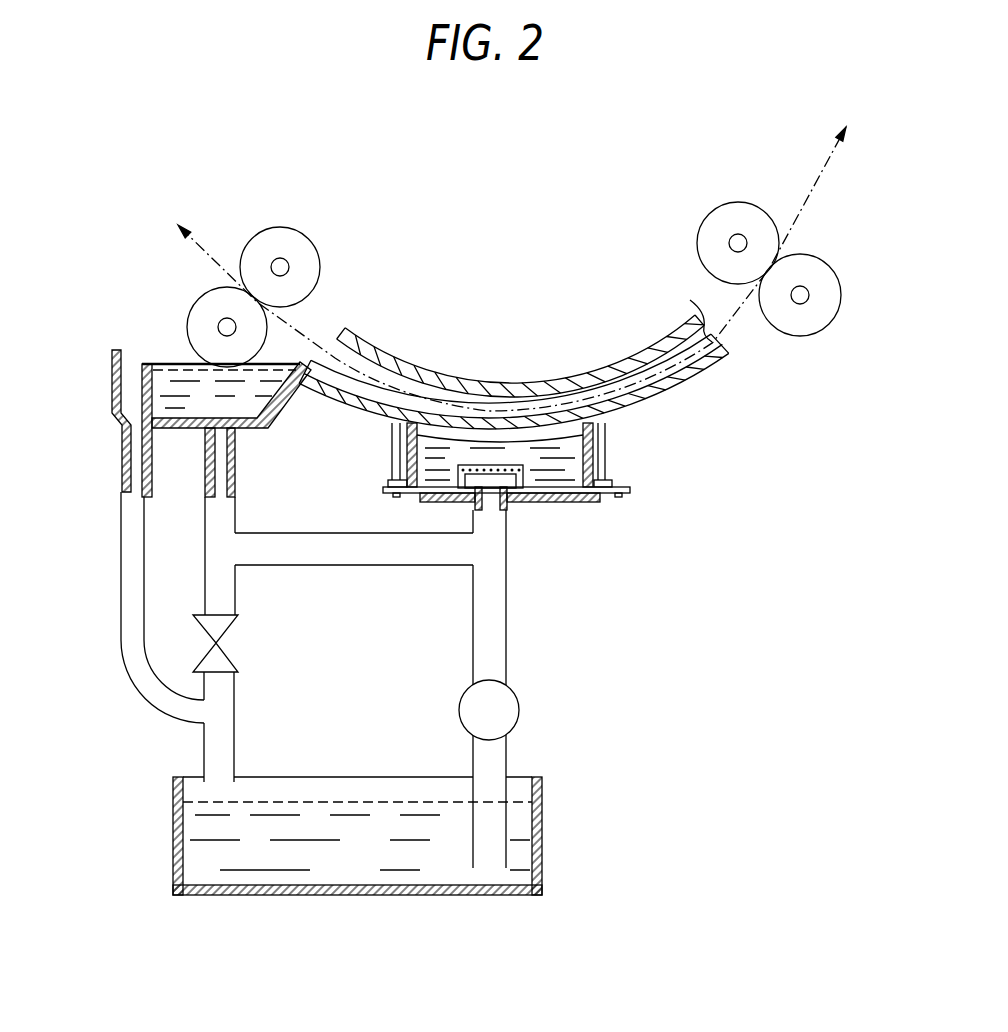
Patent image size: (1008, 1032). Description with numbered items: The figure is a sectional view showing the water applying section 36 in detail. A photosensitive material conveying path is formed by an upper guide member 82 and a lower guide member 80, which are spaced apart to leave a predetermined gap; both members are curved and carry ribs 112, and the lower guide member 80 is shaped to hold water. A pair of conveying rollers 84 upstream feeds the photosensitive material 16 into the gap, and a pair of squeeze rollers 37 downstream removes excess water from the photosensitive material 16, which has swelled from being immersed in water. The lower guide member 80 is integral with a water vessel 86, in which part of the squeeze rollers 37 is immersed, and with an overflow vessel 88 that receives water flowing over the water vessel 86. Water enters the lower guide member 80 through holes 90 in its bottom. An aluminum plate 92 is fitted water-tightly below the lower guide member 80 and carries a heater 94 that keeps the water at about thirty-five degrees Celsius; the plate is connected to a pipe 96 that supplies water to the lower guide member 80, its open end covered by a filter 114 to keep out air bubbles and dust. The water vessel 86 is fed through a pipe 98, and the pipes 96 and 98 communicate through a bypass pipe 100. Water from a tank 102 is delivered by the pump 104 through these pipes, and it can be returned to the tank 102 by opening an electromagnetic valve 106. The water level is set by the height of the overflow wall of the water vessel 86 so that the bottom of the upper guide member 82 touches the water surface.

The photosensitive material 16 is at (803, 214).
The water applying section 36 is at (717, 482).
The squeeze rollers 37 is at (315, 247).
The lower guide member 80 is at (719, 362).
The upper guide member 82 is at (538, 385).
The conveying rollers 84 is at (697, 237).
The water vessel 86 is at (290, 398).
The overflow vessel 88 is at (112, 372).
The holes 90 is at (556, 442).
The aluminum plate 92 is at (383, 489).
The heater 94 is at (578, 495).
The pipe 96 is at (492, 605).
The pipe 98 is at (236, 603).
The bypass pipe 100 is at (411, 563).
The tank 102 is at (542, 845).
The pump 104 is at (517, 698).
The electromagnetic valve 106 is at (226, 632).
The ribs 112 is at (685, 308).
The filter 114 is at (480, 465).